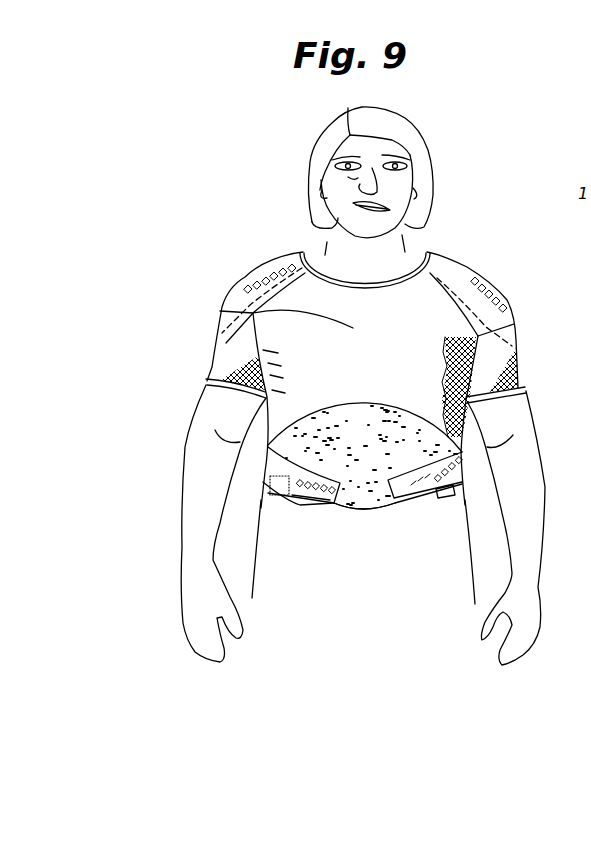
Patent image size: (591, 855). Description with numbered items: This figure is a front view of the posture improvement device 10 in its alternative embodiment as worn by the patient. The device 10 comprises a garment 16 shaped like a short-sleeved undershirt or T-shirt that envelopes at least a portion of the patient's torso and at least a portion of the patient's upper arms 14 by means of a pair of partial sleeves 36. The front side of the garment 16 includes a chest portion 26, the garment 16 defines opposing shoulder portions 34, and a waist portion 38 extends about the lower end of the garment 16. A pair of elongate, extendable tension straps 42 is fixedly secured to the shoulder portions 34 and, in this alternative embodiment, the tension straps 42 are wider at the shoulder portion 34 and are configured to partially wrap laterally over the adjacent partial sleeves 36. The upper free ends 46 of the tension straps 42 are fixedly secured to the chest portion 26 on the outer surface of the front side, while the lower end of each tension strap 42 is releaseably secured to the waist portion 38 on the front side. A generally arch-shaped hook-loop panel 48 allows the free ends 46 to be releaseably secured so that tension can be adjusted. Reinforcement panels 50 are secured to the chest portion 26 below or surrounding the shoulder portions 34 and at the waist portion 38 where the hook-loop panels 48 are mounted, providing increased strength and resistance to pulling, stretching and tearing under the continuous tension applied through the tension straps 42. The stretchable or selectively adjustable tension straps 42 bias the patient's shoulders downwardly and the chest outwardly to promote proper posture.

The posture improvement device 10 is at (256, 174).
The patient's upper arms 14 is at (208, 385).
The garment 16 is at (294, 251).
The chest portion 26 is at (250, 311).
The shoulder portions 34 is at (258, 265).
The partial sleeves 36 is at (212, 356).
The waist portion 38 is at (393, 507).
The tension straps 42 is at (230, 281).
The free ends 46 is at (322, 485).
The hook-loop panel 48 is at (370, 493).
The reinforcement panels 50 is at (218, 326).